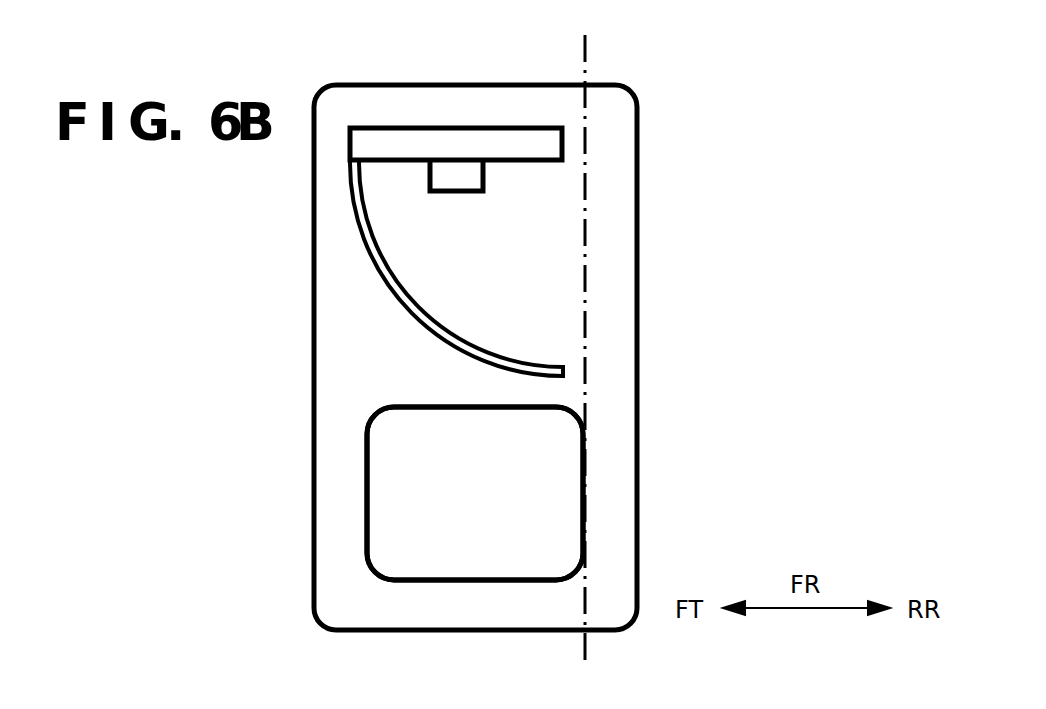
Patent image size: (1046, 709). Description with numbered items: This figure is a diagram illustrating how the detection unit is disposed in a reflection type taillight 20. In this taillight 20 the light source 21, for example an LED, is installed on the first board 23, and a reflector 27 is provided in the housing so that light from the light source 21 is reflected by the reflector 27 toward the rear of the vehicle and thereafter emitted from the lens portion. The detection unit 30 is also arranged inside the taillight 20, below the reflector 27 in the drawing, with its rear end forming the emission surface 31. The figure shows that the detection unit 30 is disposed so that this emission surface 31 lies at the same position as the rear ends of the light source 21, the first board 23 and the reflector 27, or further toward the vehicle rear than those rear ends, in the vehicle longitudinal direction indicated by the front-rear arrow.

The taillight 20 is at (402, 632).
The light source 21 is at (483, 180).
The first board 23 is at (562, 134).
The reflector 27 is at (565, 371).
The detection unit 30 is at (513, 558).
The emission surface 31 is at (585, 487).